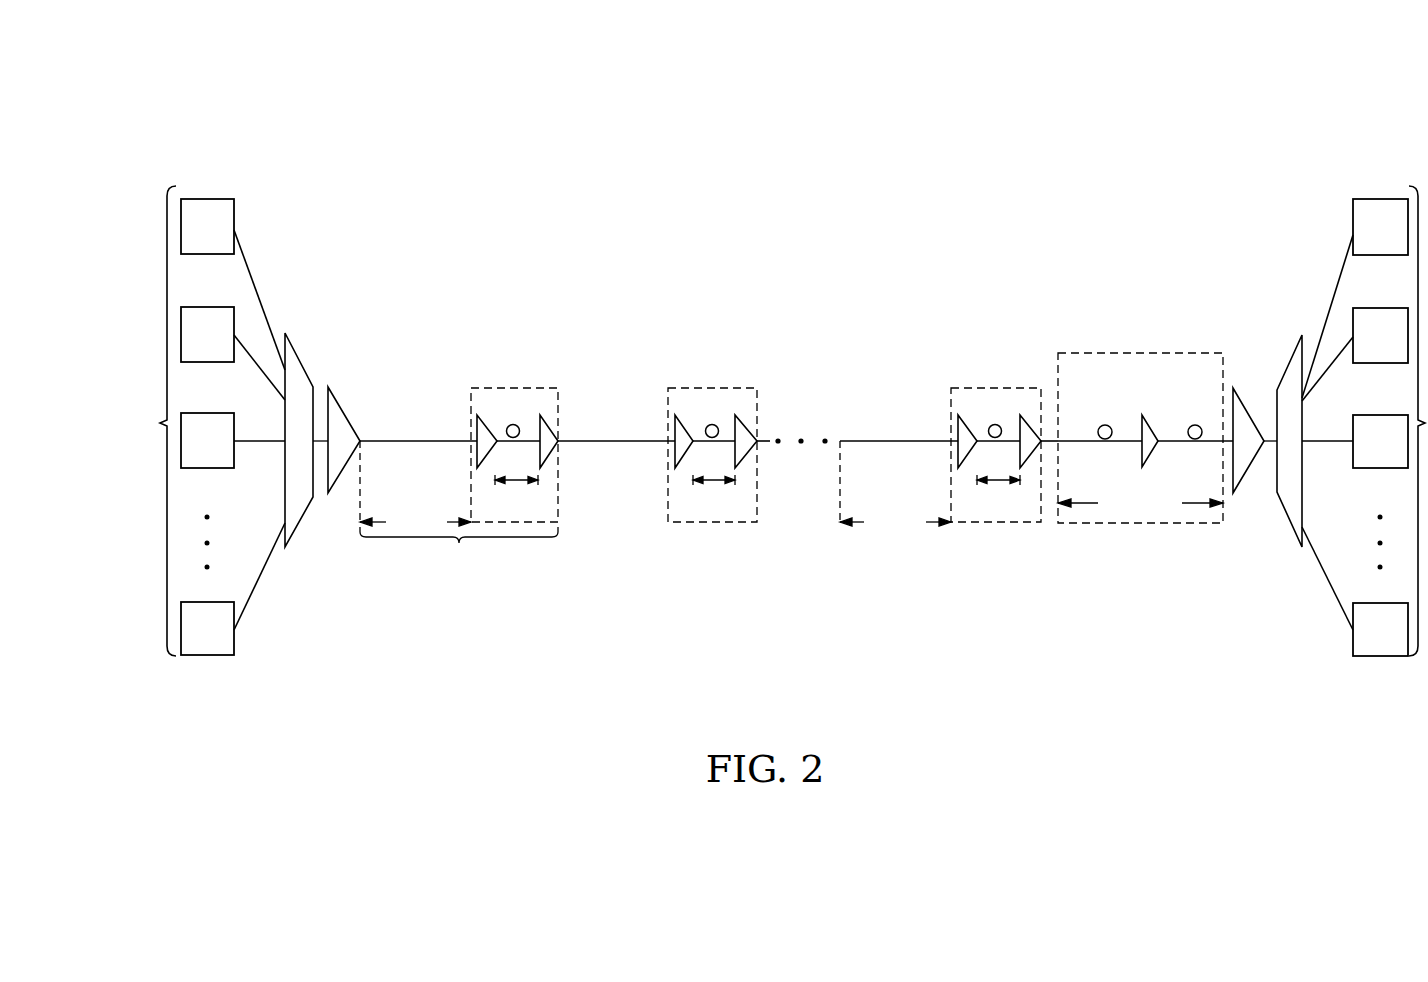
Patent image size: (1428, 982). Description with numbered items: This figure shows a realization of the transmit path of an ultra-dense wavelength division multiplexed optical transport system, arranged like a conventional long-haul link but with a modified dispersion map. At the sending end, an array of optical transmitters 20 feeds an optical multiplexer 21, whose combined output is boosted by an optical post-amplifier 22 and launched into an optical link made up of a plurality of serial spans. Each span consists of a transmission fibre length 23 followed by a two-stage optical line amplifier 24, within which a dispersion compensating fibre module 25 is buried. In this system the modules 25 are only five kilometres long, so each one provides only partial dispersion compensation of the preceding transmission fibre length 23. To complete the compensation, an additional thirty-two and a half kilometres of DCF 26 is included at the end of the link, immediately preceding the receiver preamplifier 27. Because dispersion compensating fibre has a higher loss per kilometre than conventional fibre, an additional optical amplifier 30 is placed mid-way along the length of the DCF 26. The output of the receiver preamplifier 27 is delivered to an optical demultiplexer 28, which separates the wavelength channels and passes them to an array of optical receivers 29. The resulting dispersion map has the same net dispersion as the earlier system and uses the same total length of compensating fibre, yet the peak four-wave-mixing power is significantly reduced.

The transmitters 20 is at (207, 443).
The multiplexer 21 is at (298, 523).
The post-amplifier 22 is at (345, 415).
The transmission fibre length 23 is at (415, 438).
The two-stage optical line amplifier 24 is at (530, 388).
The dispersion compensating fibre module 25 is at (508, 425).
The DCF 26 is at (1122, 353).
The receiver preamplifier 27 is at (1238, 405).
The demultiplexer 28 is at (1283, 507).
The receivers 29 is at (1380, 199).
The additional optical amplifier 30 is at (1141, 417).